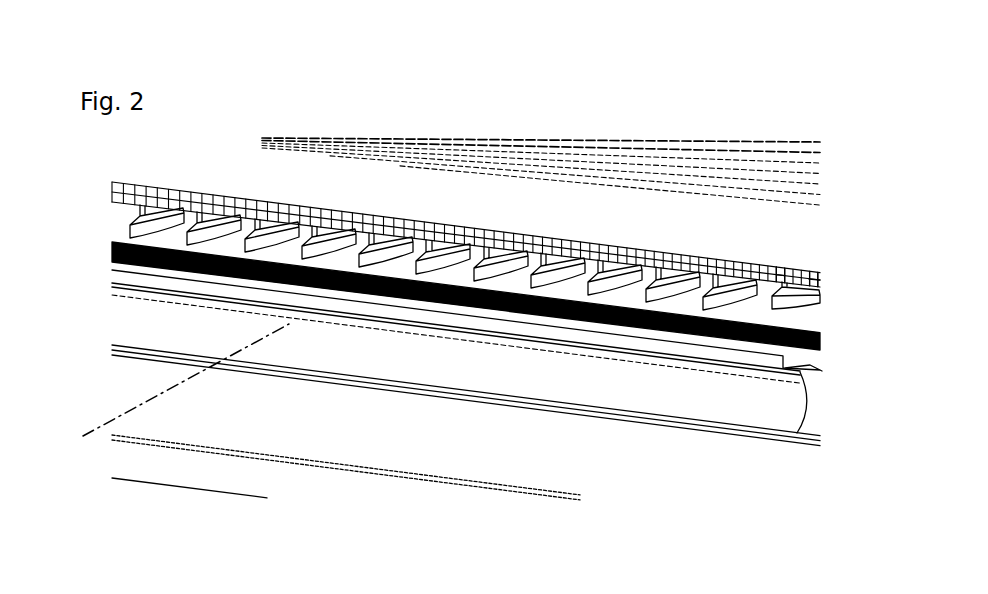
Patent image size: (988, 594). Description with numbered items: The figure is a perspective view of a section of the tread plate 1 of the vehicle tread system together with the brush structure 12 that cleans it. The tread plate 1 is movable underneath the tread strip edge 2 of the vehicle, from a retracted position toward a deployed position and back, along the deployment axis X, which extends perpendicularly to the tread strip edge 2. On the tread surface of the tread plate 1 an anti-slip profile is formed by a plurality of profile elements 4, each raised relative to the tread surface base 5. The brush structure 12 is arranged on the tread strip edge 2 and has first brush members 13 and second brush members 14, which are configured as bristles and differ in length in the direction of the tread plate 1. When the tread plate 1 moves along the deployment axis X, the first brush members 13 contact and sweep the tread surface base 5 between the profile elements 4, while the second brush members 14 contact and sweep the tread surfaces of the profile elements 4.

The tread plate 1 is at (748, 312).
The tread strip edge 2 is at (303, 183).
The profile elements 4 is at (558, 276).
The tread surface base 5 is at (580, 287).
The brush structure 12 is at (101, 189).
The first brush members 13 is at (777, 289).
The second brush members 14 is at (818, 283).
The deployment axis X is at (133, 408).